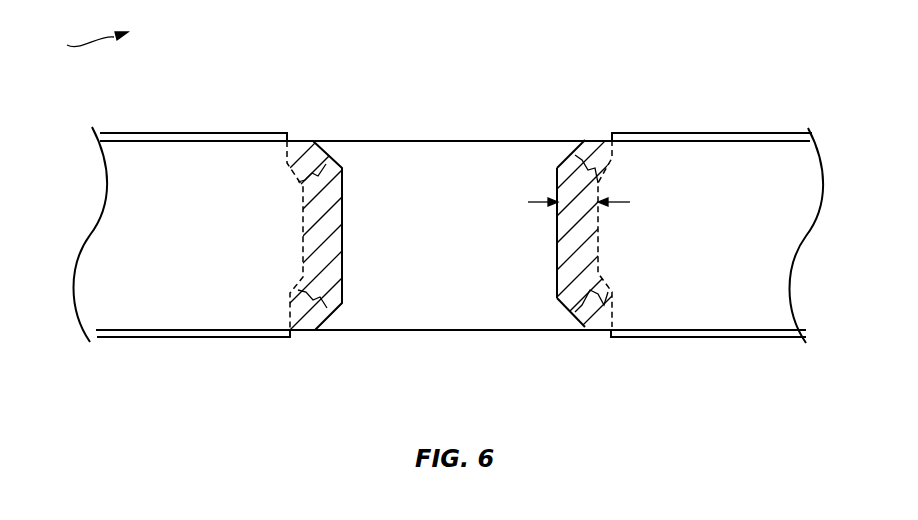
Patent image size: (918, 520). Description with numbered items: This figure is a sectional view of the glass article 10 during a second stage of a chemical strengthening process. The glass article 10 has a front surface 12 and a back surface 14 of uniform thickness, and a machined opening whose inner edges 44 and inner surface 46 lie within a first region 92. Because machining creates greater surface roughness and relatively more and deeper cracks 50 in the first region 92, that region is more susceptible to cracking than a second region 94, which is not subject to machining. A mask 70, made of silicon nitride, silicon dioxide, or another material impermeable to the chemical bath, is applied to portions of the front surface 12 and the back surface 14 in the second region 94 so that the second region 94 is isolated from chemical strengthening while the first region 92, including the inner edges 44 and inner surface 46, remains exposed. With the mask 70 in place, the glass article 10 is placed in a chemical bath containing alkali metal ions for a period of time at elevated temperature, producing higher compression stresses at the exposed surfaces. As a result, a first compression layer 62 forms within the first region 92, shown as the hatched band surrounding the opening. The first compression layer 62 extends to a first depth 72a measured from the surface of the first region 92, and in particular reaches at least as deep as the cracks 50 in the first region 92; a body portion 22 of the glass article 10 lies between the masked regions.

The glass article 10 is at (86, 42).
The front surface 12 is at (693, 140).
The back surface 14 is at (597, 330).
The inner member 22 is at (405, 290).
The inner edges 44 is at (570, 142).
The inner surface 46 is at (558, 238).
The cracks 50 is at (608, 292).
The first compression layer 62 is at (568, 275).
The mask 70 is at (247, 132).
The first depth 72a is at (630, 202).
The first region 92 is at (600, 142).
The second region 94 is at (655, 139).